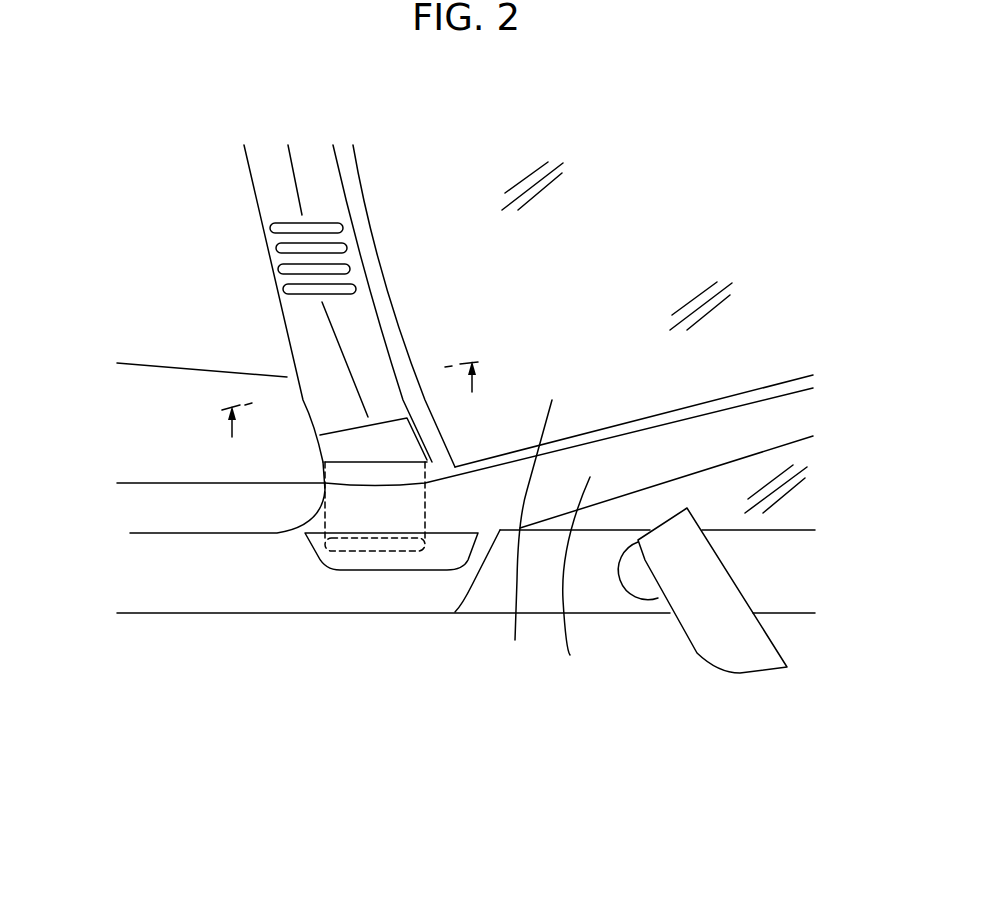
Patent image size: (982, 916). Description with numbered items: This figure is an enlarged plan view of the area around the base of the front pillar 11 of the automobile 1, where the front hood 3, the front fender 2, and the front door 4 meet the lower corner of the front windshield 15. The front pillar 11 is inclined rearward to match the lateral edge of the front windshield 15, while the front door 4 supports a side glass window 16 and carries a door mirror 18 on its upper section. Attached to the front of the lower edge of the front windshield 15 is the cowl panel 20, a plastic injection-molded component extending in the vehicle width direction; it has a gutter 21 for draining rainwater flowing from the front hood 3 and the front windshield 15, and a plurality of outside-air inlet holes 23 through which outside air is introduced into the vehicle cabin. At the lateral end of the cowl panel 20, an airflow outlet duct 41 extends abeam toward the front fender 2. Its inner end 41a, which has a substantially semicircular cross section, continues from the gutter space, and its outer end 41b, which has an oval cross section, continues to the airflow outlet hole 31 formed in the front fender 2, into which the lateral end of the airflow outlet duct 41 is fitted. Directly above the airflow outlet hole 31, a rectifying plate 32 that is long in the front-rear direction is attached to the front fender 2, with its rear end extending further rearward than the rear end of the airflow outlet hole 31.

The automobile 1 is at (266, 764).
The front fender 2 is at (182, 593).
The front hood 3 is at (153, 505).
The front door 4 is at (610, 602).
The front pillar 11 is at (570, 655).
The front windshield 15 is at (515, 640).
The side glass window 16 is at (788, 513).
The door mirror 18 is at (742, 653).
The cowl panel 20 is at (263, 180).
The gutter 21 is at (318, 335).
The outside-air inlet holes 23 is at (282, 250).
The airflow outlet hole 31 is at (377, 545).
The rectifying plate 32 is at (405, 560).
The airflow outlet duct 41 is at (465, 523).
The inner end 41a is at (347, 425).
The outer end 41b is at (330, 545).